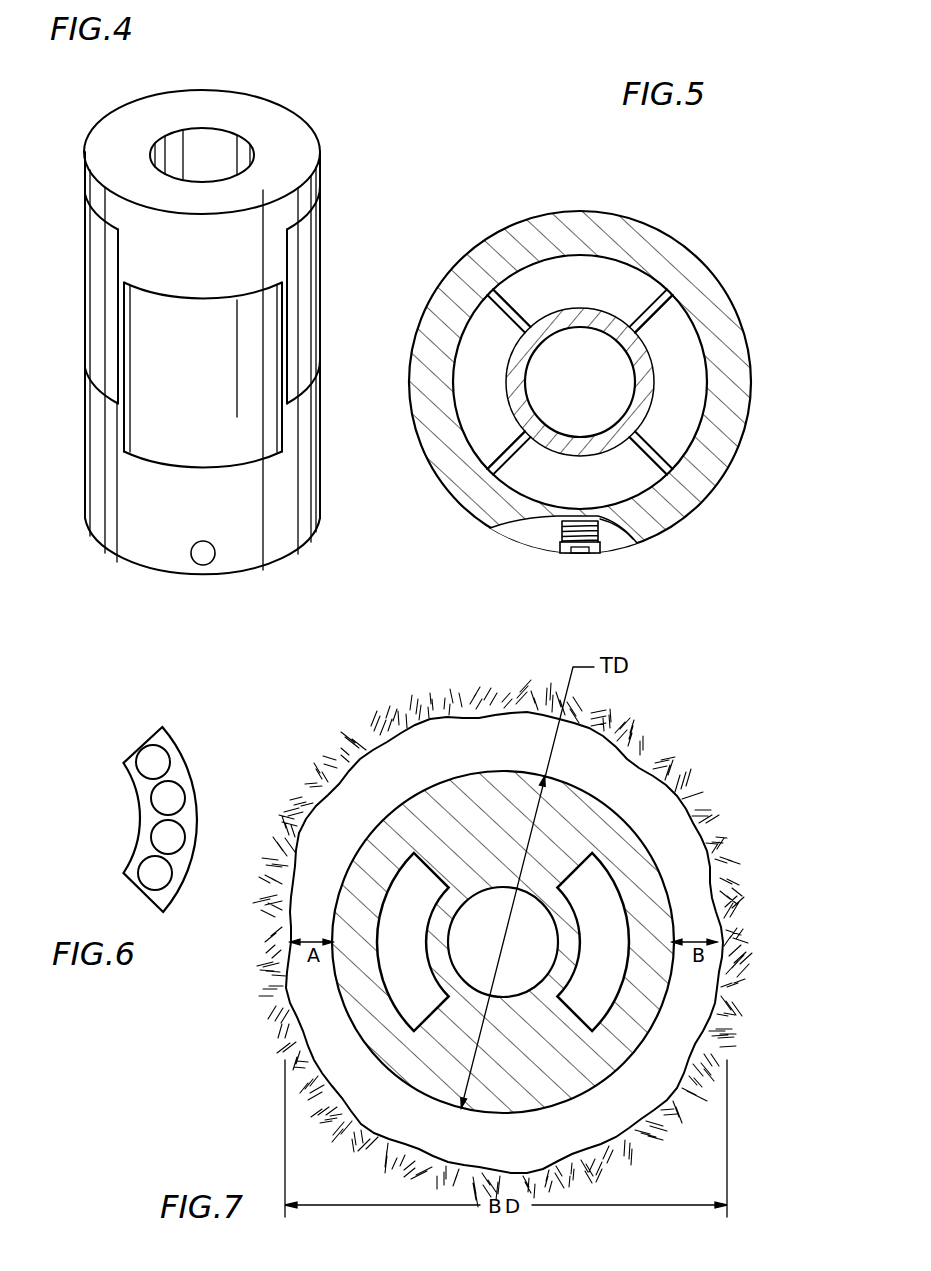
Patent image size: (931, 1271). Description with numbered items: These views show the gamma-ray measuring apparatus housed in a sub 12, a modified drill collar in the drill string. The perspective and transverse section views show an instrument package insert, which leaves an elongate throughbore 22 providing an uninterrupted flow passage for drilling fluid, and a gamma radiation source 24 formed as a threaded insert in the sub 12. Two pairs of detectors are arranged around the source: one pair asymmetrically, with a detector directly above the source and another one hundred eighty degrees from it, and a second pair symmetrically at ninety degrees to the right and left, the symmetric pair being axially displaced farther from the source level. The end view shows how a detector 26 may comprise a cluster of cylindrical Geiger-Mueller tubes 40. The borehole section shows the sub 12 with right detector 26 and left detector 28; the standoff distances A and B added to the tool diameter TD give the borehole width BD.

In FIG. 5, the sub 12 is at (673, 508).
In FIG. 7, the sub 12 is at (717, 1012).
In FIG. 4, the throughbore 22 is at (250, 143).
In FIG. 5, the throughbore 22 is at (530, 398).
In FIG. 7, the throughbore 22 is at (449, 942).
In FIG. 4, the gamma radiation source 24 is at (195, 555).
In FIG. 5, the gamma radiation source 24 is at (568, 556).
In FIG. 6, the detector 26 is at (178, 769).
In FIG. 7, the detector 26 is at (600, 878).
In FIG. 7, the detector 28 is at (390, 1002).
In FIG. 6, the Geiger-Mueller tubes 40 is at (162, 803).